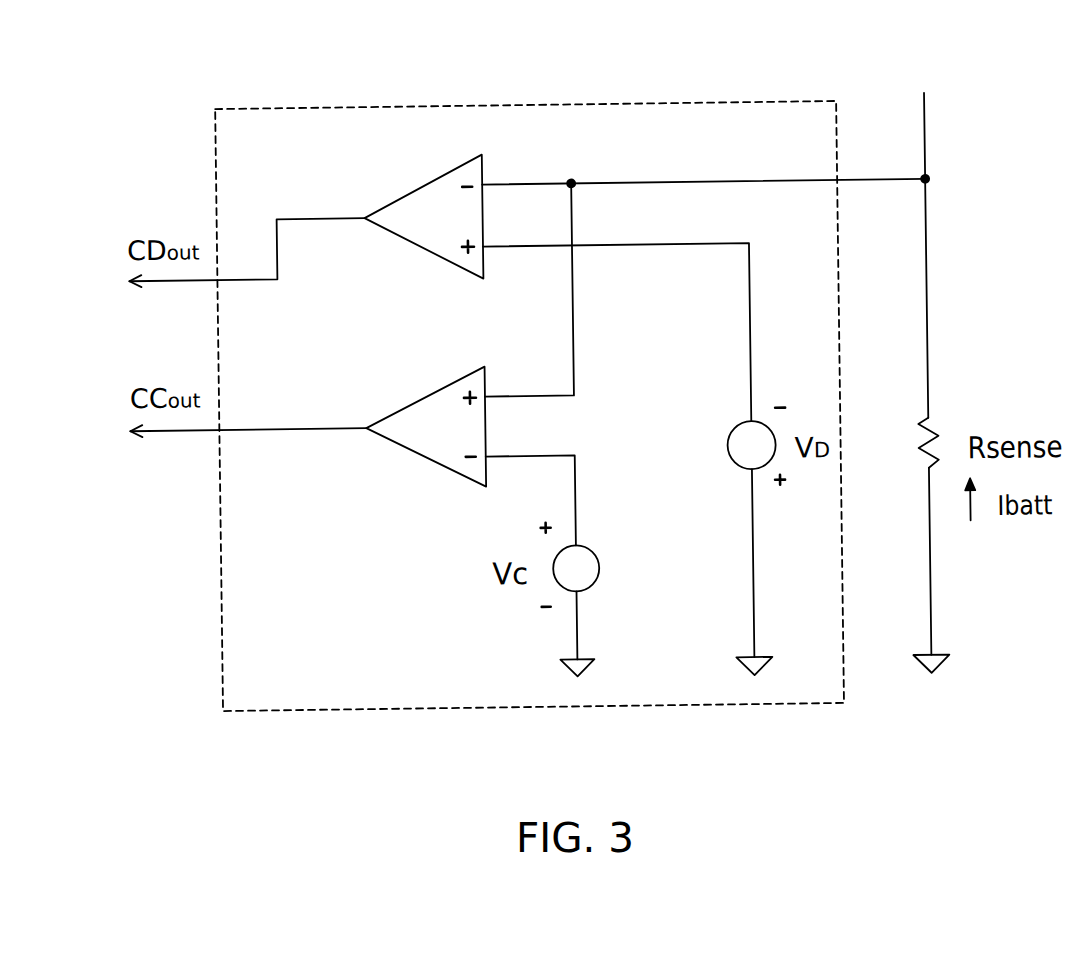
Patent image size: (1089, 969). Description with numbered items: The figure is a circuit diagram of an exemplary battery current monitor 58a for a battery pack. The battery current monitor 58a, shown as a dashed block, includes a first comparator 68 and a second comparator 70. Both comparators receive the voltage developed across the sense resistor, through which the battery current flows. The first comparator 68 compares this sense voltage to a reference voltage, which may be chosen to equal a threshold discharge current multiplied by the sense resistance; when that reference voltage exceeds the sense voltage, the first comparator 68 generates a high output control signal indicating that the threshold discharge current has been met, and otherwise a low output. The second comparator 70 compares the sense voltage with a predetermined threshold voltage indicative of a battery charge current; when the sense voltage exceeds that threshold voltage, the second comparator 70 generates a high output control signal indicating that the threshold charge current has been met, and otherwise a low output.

The battery current monitor 58a is at (344, 105).
The first comparator 68 is at (415, 189).
The second comparator 70 is at (415, 401).